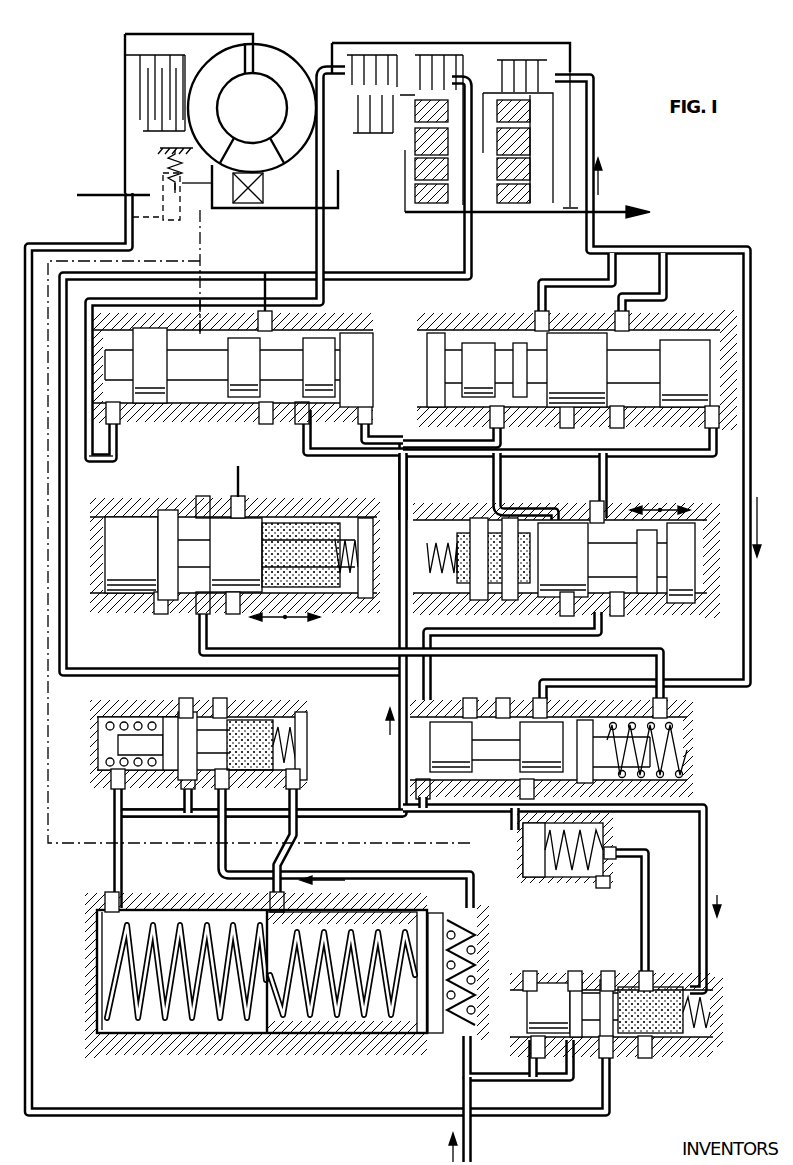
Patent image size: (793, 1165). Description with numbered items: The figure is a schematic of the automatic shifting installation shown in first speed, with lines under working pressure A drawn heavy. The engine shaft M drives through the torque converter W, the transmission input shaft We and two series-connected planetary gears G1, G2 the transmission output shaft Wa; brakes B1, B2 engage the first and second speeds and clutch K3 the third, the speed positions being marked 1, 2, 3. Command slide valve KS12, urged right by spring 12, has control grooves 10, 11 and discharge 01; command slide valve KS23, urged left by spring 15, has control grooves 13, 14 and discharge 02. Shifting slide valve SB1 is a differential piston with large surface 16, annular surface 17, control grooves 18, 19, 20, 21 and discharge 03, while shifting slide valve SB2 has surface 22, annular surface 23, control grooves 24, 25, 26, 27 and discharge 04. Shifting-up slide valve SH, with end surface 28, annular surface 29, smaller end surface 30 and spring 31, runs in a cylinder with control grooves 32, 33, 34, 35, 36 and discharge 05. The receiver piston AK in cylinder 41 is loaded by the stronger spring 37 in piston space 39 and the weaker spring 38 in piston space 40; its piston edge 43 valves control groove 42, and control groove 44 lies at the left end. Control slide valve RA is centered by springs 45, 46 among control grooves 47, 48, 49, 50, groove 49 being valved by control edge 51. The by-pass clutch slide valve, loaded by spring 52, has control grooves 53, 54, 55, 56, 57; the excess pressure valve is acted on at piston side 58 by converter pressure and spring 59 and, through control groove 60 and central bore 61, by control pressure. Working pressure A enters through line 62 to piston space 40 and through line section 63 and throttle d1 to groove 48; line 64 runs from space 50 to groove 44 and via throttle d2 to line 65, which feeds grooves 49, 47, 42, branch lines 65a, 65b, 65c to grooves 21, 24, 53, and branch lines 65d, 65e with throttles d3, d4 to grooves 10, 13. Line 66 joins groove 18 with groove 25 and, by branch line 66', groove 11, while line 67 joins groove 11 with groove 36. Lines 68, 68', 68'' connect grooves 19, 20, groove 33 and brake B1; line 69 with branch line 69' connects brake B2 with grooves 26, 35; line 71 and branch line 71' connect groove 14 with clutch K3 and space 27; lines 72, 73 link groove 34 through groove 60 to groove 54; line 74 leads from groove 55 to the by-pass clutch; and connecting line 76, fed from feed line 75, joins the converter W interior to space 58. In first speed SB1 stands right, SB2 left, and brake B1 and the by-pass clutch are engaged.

The first gear position 1 is at (686, 490).
The second gear position 2 is at (466, 558).
The third gear position 3 is at (315, 626).
The control groove 10 is at (560, 615).
The control groove 11 is at (617, 615).
The spring 12 is at (432, 530).
The control groove 13 is at (233, 600).
The control groove 14 is at (200, 605).
The spring 15 is at (356, 573).
The large effective piston surface 16 is at (690, 335).
The smaller effective annular piston surface 17 is at (535, 318).
The control groove 18 is at (710, 425).
The control groove 19 is at (617, 420).
The control groove 20 is at (535, 420).
The control groove 21 is at (490, 420).
The surface 22 is at (340, 333).
The annular surface 23 is at (172, 328).
The control groove 24 is at (358, 412).
The control groove 25 is at (300, 420).
The control groove 26 is at (264, 418).
The pressure space 27 is at (112, 410).
The large end surface 28 is at (600, 718).
The annular surface 29 is at (582, 718).
The smaller end surface 30 is at (412, 785).
The spring 31 is at (683, 778).
The pressure space 32 is at (683, 740).
The control groove 33 is at (540, 712).
The control groove 34 is at (504, 712).
The control groove 35 is at (468, 712).
The control groove 36 is at (398, 710).
The stronger spring 37 is at (105, 1008).
The weaker spring 38 is at (476, 1025).
The piston space 39 is at (147, 1033).
The piston space 40 is at (450, 1040).
The cylinder 41 is at (207, 1035).
The control groove 42 is at (283, 905).
The piston edge 43 is at (436, 913).
The control groove 44 is at (118, 900).
The spring 45 is at (300, 745).
The spring 46 is at (100, 728).
The control groove 47 is at (300, 715).
The control groove 48 is at (220, 708).
The control groove 49 is at (190, 708).
The control space 50 is at (100, 760).
The control edge 51 is at (162, 775).
The spring 52 is at (716, 993).
The control groove 53 is at (688, 1045).
The control groove 54 is at (648, 972).
The control groove 55 is at (608, 972).
The control groove 56 is at (575, 972).
The control groove 57 is at (533, 972).
The piston side 58 is at (530, 855).
The spring 59 is at (540, 878).
The control groove 60 is at (602, 884).
The central bore 61 is at (616, 855).
The line 62 is at (473, 1085).
The line section 63 is at (402, 876).
The line 64 is at (113, 862).
The line 65 is at (400, 765).
The branch line 65a is at (415, 444).
The branch line 65b is at (370, 405).
The branch line 65c is at (709, 828).
The branch line 65d is at (407, 490).
The branch line 65e is at (365, 492).
The line 66 is at (558, 470).
The branch line 66' is at (635, 485).
The line 67 is at (427, 640).
The line 68 is at (576, 279).
The line 68' is at (662, 389).
The line 68'' is at (663, 283).
The line 69 is at (265, 376).
The branch line 69' is at (281, 284).
The line 71 is at (213, 278).
The branch line 71' is at (130, 450).
The line 72 is at (517, 825).
The line 73 is at (650, 892).
The line 74 is at (33, 975).
The feed line 75 is at (202, 300).
The connecting line 76 is at (198, 245).
The discharge 01 is at (640, 610).
The discharge 02 is at (162, 600).
The discharge 03 is at (577, 420).
The discharge 04 is at (213, 412).
The discharge 05 is at (541, 747).
The throttle d1 is at (227, 797).
The throttle d2 is at (137, 815).
The throttle d3 is at (588, 499).
The throttle d4 is at (231, 484).
The working pressure A is at (472, 1119).
The engine shaft M is at (86, 195).
The clutch K3 is at (372, 55).
The brake B1 is at (523, 57).
The brake B2 is at (438, 55).
The planetary gear G1 is at (513, 168).
The planetary gear G2 is at (420, 168).
The torque converter W is at (252, 108).
The transmission input shaft We is at (230, 210).
The transmission output shaft Wa is at (612, 210).
The shifting slide valve SB1 is at (577, 350).
The shifting slide valve SB2 is at (148, 392).
The command slide valve KS23 is at (132, 520).
The command slide valve KS12 is at (660, 632).
The control slide valve RA is at (142, 720).
The shifting-up slide valve SH is at (527, 790).
The receiver piston AK is at (292, 1040).